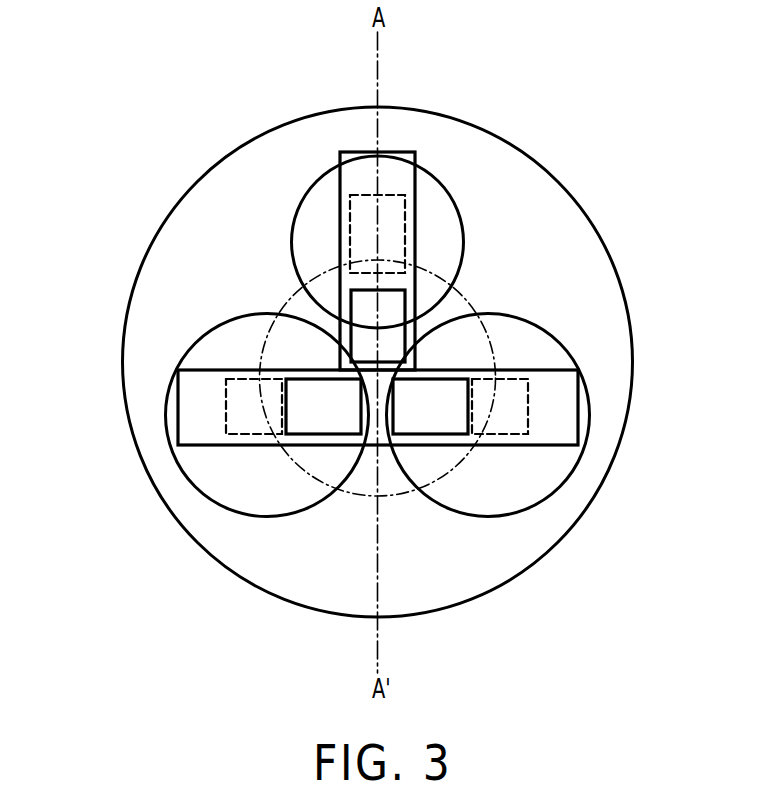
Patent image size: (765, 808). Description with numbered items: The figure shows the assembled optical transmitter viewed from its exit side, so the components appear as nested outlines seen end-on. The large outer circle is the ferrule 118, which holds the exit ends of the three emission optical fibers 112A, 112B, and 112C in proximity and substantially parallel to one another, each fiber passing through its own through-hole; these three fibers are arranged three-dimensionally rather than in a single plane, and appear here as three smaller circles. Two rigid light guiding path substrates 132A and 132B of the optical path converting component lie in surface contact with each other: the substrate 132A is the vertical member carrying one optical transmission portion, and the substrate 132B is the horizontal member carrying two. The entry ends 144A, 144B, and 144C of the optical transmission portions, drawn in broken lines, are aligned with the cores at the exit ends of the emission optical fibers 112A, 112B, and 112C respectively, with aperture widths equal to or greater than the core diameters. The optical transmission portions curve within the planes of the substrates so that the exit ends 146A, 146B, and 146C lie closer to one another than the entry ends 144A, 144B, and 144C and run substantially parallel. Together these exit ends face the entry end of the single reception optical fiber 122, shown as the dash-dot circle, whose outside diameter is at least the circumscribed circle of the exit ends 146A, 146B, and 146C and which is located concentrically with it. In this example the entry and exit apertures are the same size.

The ferrule 118 is at (443, 135).
The reception optical fiber 122 is at (298, 307).
The emission optical fiber 112A is at (430, 190).
The emission optical fiber 112B is at (522, 350).
The emission optical fiber 112C is at (218, 350).
The rigid light guiding path substrate 132A is at (362, 167).
The rigid light guiding path substrate 132B is at (557, 426).
The entry end 144A is at (393, 227).
The entry end 144B is at (520, 403).
The entry end 144C is at (230, 400).
The exit end 146A is at (392, 312).
The exit end 146B is at (432, 418).
The exit end 146C is at (337, 417).